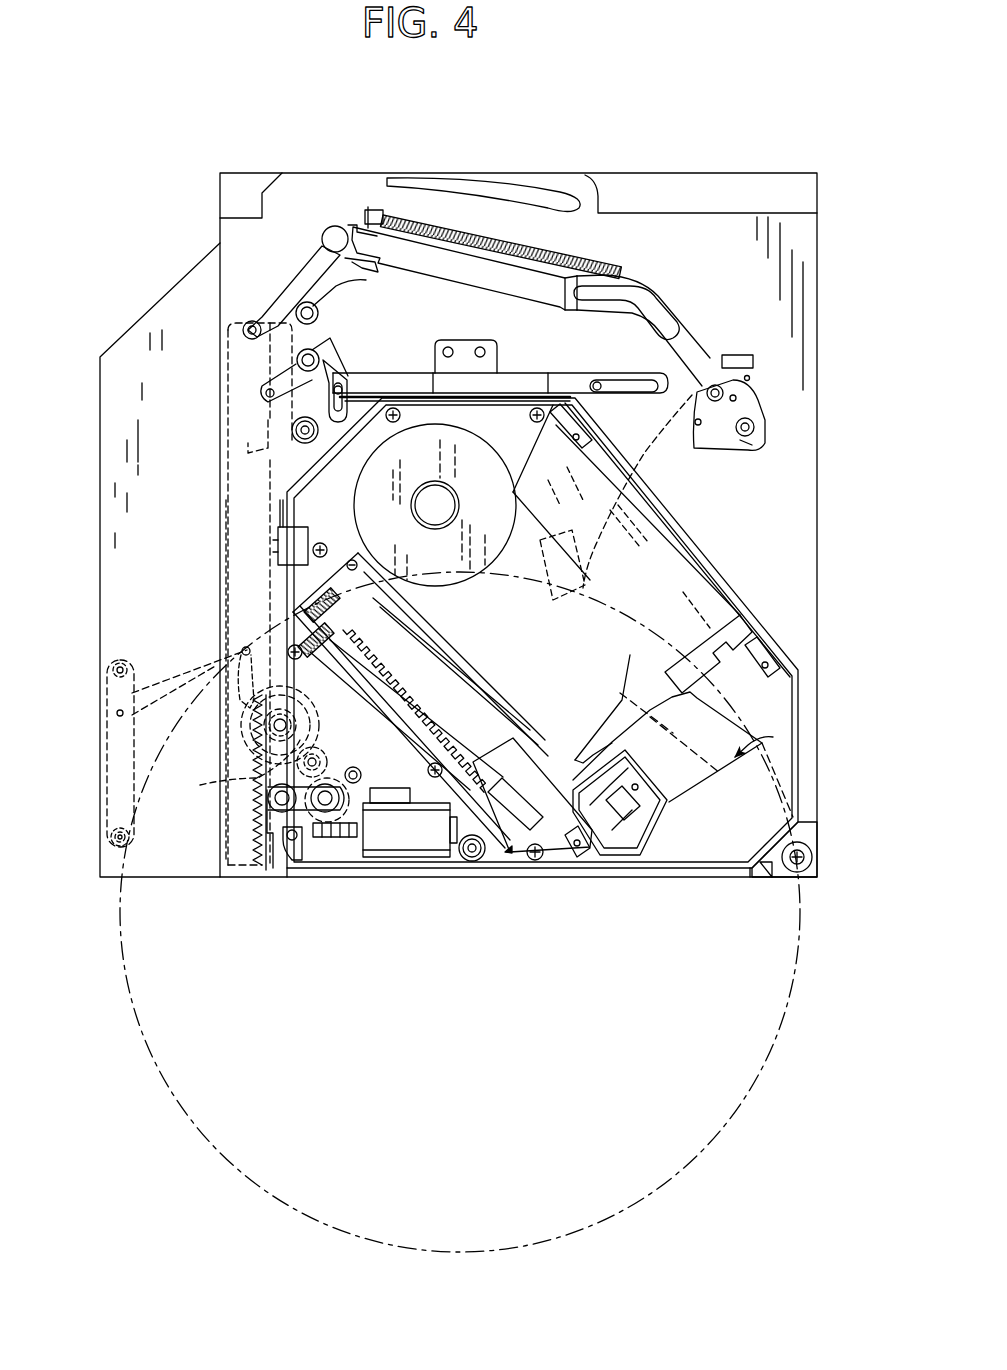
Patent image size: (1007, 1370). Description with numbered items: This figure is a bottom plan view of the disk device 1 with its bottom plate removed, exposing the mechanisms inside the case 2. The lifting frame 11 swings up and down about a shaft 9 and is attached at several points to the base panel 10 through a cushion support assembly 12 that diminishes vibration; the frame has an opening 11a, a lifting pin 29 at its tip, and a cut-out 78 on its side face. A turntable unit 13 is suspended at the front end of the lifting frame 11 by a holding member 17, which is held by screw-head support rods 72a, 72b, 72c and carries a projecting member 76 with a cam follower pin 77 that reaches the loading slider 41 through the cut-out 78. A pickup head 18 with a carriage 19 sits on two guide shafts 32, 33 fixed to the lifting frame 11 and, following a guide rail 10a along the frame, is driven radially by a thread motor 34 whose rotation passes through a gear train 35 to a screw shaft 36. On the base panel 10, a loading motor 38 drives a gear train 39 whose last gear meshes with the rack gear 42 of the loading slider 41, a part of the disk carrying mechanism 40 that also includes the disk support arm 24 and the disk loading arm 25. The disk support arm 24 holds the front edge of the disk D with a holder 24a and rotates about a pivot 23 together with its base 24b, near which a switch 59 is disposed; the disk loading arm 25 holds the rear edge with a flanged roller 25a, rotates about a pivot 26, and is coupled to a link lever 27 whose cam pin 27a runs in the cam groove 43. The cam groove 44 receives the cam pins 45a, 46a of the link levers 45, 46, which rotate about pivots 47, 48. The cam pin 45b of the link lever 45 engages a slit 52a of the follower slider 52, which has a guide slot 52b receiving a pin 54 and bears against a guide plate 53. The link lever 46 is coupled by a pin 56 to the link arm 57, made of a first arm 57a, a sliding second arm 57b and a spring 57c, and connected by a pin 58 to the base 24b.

The disc device 1 is at (603, 162).
The case 2 is at (816, 546).
The shaft 9 is at (508, 866).
The base panel 10 is at (794, 252).
The guide rail 10a is at (707, 576).
The lifting frame 11 is at (783, 698).
The opening 11a is at (620, 686).
The cushion support assembly 12 is at (318, 437).
The turntable unit 13 is at (470, 590).
The holding member 17 is at (518, 460).
The pickup head 18 is at (773, 737).
The carriage 19 is at (698, 794).
The pivot 23 is at (754, 427).
The disk support arm 24 is at (652, 452).
The holder 24a is at (590, 572).
The base 24b is at (722, 437).
The disk loading arm 25 is at (106, 773).
The flanged roller 25a is at (108, 836).
The pivot 26 is at (110, 670).
The link lever 27 is at (152, 688).
The cam pin 27a is at (240, 648).
The lifting pin 29 is at (480, 410).
The guide shaft 32 is at (440, 690).
The guide shaft 33 is at (694, 604).
The thread motor 34 is at (345, 682).
The gear train 35 is at (303, 618).
The screw shaft 36 is at (495, 733).
The loading motor 38 is at (393, 838).
The gear train 39 is at (230, 782).
The disk carrying mechanism 40 is at (265, 470).
The loading slider 41 is at (248, 486).
The rack gear 42 is at (262, 872).
The cam groove 43 is at (247, 656).
The cam groove 44 is at (246, 382).
The link lever 45 is at (338, 378).
The cam pin 45a is at (268, 396).
The cam pin 45b is at (344, 384).
The link lever 46 is at (324, 274).
The cam pin 46a is at (250, 328).
The pivot 47 is at (296, 360).
The pivot 48 is at (296, 312).
The follower slider 52 is at (540, 372).
The slit 52a is at (352, 422).
The guide slot 52b is at (614, 380).
The guide plate 53 is at (443, 340).
The pin 54 is at (594, 384).
The pin 56 is at (340, 228).
The link arm 57 is at (466, 250).
The first arm 57a is at (412, 252).
The second arm 57b is at (662, 306).
The spring 57c is at (552, 253).
The pin 58 is at (713, 384).
The switch 59 is at (737, 355).
The support rod 72a is at (545, 415).
The support rod 72b is at (393, 407).
The support rod 72c is at (318, 543).
The projecting member 76 is at (277, 538).
The cam follower pin 77 is at (277, 552).
The cut-out 78 is at (272, 528).
The disk D is at (695, 1160).